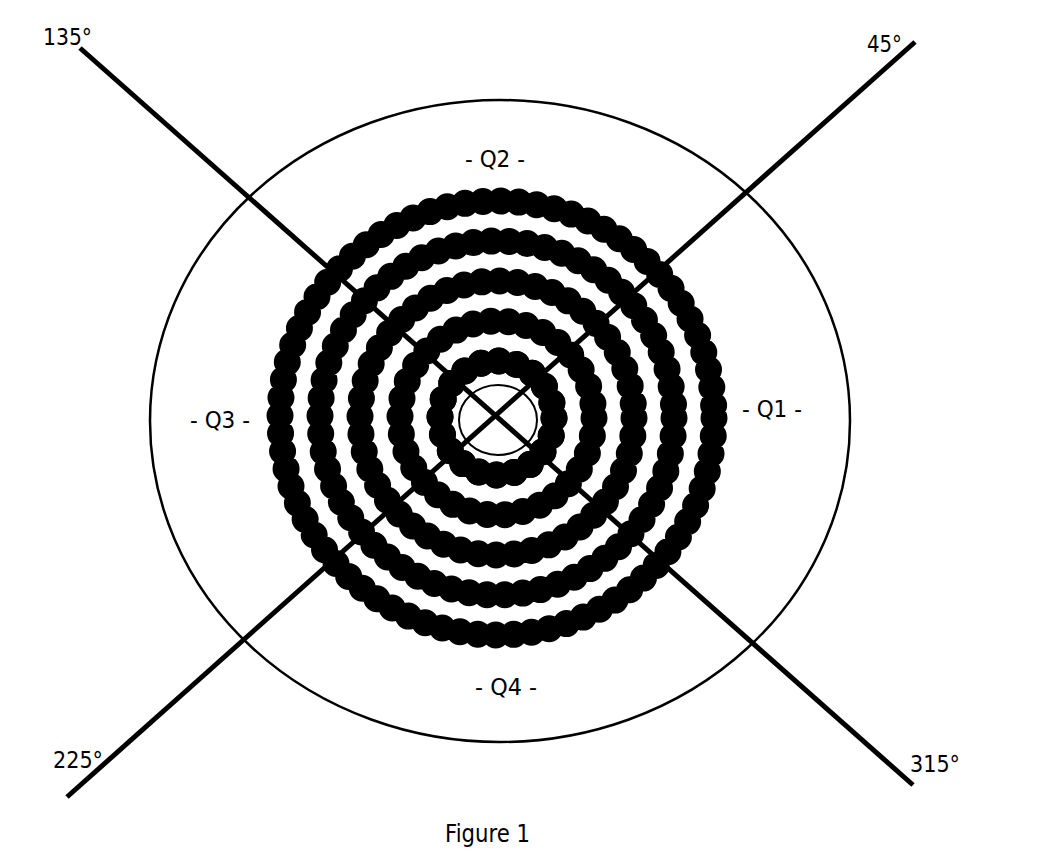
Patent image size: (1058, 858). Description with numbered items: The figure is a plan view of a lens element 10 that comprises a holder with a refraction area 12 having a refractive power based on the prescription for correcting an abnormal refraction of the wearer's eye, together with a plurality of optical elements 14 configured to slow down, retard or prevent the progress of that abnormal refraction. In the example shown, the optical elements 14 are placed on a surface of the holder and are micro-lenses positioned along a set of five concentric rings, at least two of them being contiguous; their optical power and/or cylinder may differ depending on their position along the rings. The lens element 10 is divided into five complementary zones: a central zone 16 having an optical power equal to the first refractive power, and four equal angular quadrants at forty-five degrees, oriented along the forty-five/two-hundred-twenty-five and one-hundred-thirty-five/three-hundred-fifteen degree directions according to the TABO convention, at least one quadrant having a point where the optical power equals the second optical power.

The lens element 10 is at (188, 226).
The refraction area 12 is at (497, 400).
The optical elements 14 is at (673, 373).
The central zone 16 is at (440, 420).